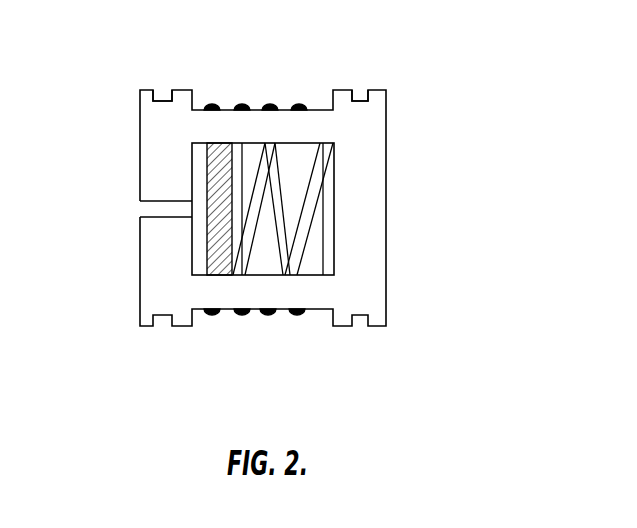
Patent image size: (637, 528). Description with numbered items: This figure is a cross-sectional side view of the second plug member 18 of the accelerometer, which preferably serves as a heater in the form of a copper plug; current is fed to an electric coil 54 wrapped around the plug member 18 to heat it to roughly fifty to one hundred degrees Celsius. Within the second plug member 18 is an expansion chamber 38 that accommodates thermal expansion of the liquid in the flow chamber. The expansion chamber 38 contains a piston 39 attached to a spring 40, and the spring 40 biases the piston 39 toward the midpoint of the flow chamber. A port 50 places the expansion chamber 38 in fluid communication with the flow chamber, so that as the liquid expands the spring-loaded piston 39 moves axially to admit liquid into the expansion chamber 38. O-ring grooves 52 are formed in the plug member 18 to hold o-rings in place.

The second plug member 18 is at (456, 78).
The expansion chamber 38 is at (258, 260).
The piston 39 is at (228, 228).
The spring 40 is at (312, 188).
The port 50 is at (148, 209).
The o-ring grooves 52 is at (163, 101).
The electric coil 54 is at (268, 313).